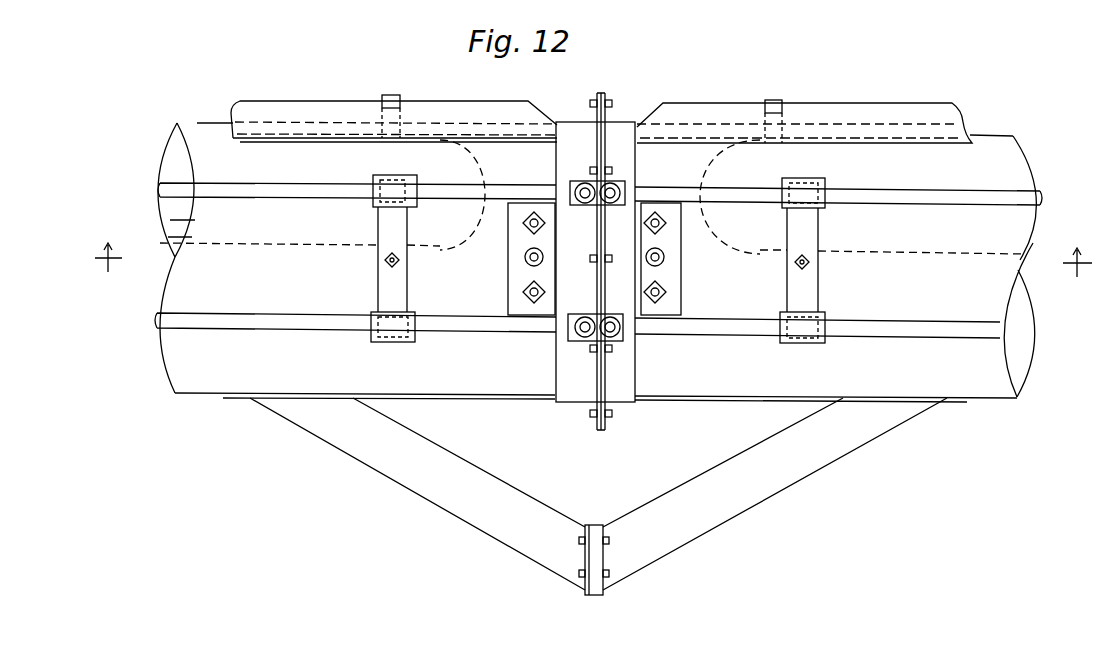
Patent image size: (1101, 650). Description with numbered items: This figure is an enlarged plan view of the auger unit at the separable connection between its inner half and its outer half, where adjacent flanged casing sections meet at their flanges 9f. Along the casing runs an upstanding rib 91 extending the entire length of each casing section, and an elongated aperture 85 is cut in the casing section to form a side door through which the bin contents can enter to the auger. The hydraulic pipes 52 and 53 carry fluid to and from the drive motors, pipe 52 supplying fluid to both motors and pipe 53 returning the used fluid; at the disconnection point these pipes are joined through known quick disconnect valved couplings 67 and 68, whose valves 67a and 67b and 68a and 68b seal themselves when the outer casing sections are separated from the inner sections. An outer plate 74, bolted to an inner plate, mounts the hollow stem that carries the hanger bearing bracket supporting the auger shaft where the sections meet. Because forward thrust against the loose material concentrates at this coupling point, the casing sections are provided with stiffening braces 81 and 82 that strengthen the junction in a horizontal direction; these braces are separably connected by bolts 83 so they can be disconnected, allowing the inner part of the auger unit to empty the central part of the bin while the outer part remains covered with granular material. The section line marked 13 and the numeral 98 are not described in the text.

The elongated aperture 85 is at (163, 188).
The lower pipe member 98 is at (198, 394).
The upstanding rib 91 is at (421, 101).
The flange 9f is at (601, 120).
The outer plate 74 is at (508, 291).
The pipe 53 is at (296, 197).
The pipe 52 is at (296, 315).
The quick disconnect valved coupling 68 is at (581, 205).
The valve 68a is at (583, 184).
The valve 68b is at (619, 190).
The quick disconnect valved coupling 67 is at (583, 315).
The valve 67a is at (586, 341).
The valve 67b is at (610, 341).
The stiffening brace 81 is at (497, 540).
The stiffening brace 82 is at (728, 520).
The bolt 83 is at (612, 542).
The section line 13 is at (593, 265).